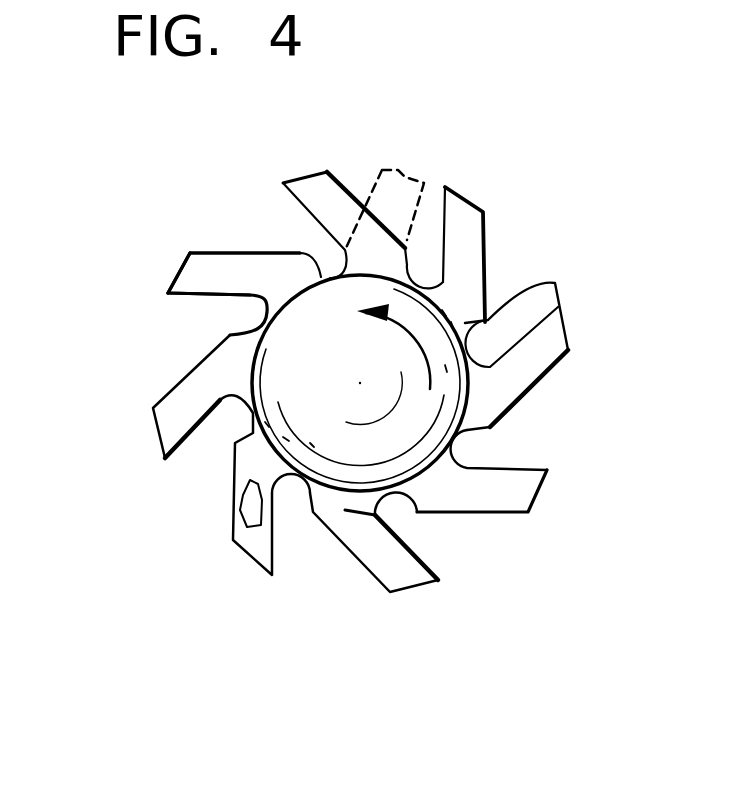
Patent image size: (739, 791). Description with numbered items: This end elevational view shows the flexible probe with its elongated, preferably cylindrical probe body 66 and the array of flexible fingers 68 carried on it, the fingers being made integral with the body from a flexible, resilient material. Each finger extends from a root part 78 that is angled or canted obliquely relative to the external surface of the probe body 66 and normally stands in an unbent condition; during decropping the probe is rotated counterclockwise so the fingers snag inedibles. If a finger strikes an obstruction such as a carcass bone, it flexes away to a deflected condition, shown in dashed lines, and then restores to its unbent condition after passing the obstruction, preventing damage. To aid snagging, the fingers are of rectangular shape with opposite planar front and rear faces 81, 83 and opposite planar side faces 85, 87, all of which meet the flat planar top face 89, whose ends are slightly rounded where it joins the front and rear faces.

The probe body 66 is at (436, 440).
The flexible fingers 68 is at (458, 198).
The root part 78 is at (560, 282).
The front face 81 is at (190, 298).
The rear face 83 is at (200, 252).
The side face 85 is at (244, 291).
The side face 87 is at (250, 506).
The top face 89 is at (180, 273).